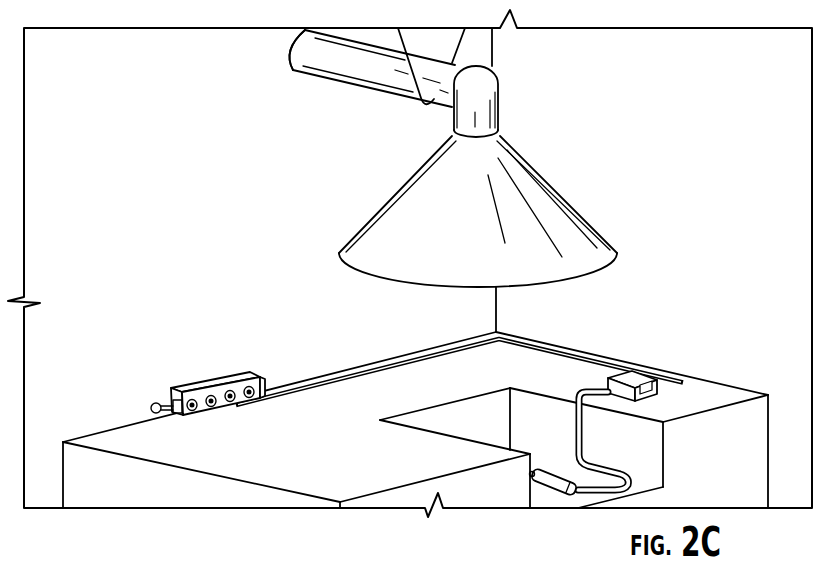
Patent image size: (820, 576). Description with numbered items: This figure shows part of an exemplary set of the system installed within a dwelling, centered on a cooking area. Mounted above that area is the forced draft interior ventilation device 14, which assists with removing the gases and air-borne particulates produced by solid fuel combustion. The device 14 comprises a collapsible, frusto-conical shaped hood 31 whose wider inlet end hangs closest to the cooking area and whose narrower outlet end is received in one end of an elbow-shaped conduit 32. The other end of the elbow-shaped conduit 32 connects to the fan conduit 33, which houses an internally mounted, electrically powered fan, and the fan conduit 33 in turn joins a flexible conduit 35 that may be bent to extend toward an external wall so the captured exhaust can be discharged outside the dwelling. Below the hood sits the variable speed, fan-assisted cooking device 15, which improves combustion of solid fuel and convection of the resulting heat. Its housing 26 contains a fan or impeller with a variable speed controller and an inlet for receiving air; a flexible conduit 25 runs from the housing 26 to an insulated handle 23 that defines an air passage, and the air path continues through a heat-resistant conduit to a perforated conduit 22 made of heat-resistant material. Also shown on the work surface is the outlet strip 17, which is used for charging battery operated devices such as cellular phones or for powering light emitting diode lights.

The forced draft interior ventilation device 14 is at (574, 136).
The variable speed, fan-assisted cooking device 15 is at (532, 443).
The outlet strip 17 is at (222, 378).
The perforated conduit 22 is at (535, 470).
The insulated handle 23 is at (557, 491).
The flexible conduit 25 is at (582, 452).
The housing 26 is at (633, 375).
The collapsible, frusto-conical shaped hood 31 is at (484, 236).
The elbow-shaped conduit 32 is at (485, 101).
The fan conduit 33 is at (390, 75).
The flexible conduit 35 is at (358, 62).